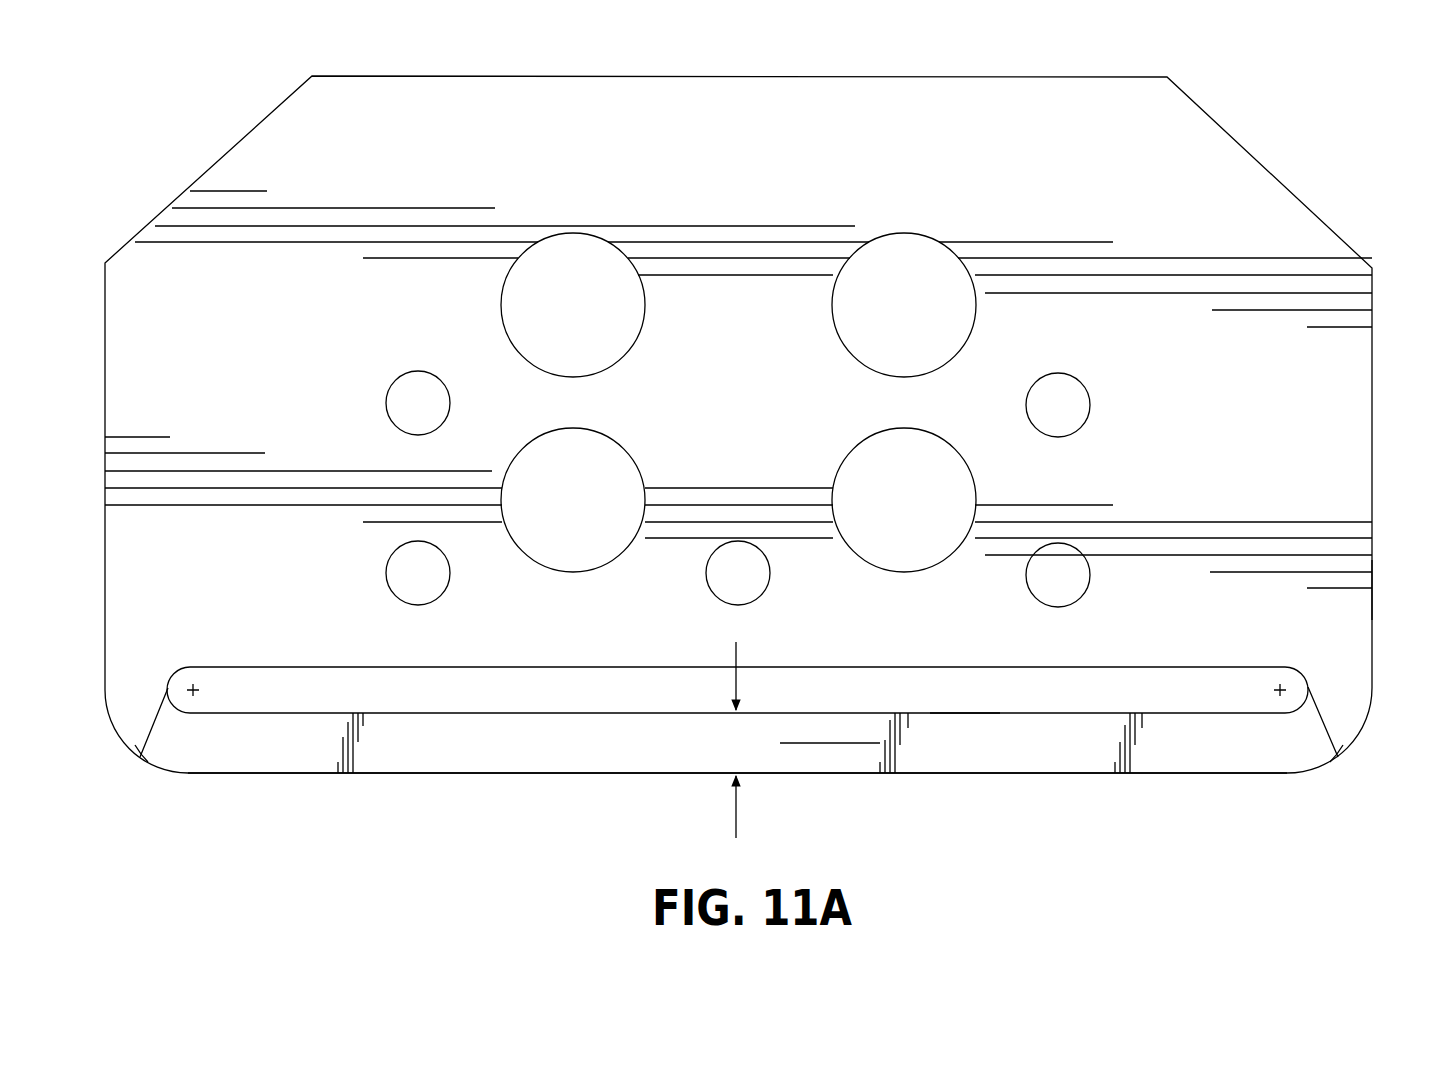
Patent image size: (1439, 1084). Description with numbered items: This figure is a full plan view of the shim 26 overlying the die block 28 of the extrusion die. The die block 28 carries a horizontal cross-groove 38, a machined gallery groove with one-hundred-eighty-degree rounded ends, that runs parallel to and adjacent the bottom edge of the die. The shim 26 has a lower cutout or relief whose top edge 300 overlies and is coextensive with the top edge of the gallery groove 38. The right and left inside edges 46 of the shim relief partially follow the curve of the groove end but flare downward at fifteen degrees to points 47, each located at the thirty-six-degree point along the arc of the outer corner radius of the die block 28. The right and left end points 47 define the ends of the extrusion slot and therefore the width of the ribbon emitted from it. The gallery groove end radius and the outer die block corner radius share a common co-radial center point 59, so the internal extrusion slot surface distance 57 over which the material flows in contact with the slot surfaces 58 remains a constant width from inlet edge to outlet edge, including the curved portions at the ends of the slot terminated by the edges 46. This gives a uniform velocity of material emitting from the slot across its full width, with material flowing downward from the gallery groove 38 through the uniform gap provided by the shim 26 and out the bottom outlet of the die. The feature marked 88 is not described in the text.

The shim 26 is at (246, 417).
The die block 28 is at (412, 781).
The horizontal cross-groove 38 is at (953, 698).
The flared side edges 46 is at (162, 731).
The points 47 is at (144, 765).
The internal extrusion slot surface distance 57 is at (736, 815).
The slot surfaces 58 is at (830, 740).
The co-radial center point 59 is at (199, 687).
The side edge 88 is at (1378, 588).
The top edge of the shim relief 300 is at (563, 662).